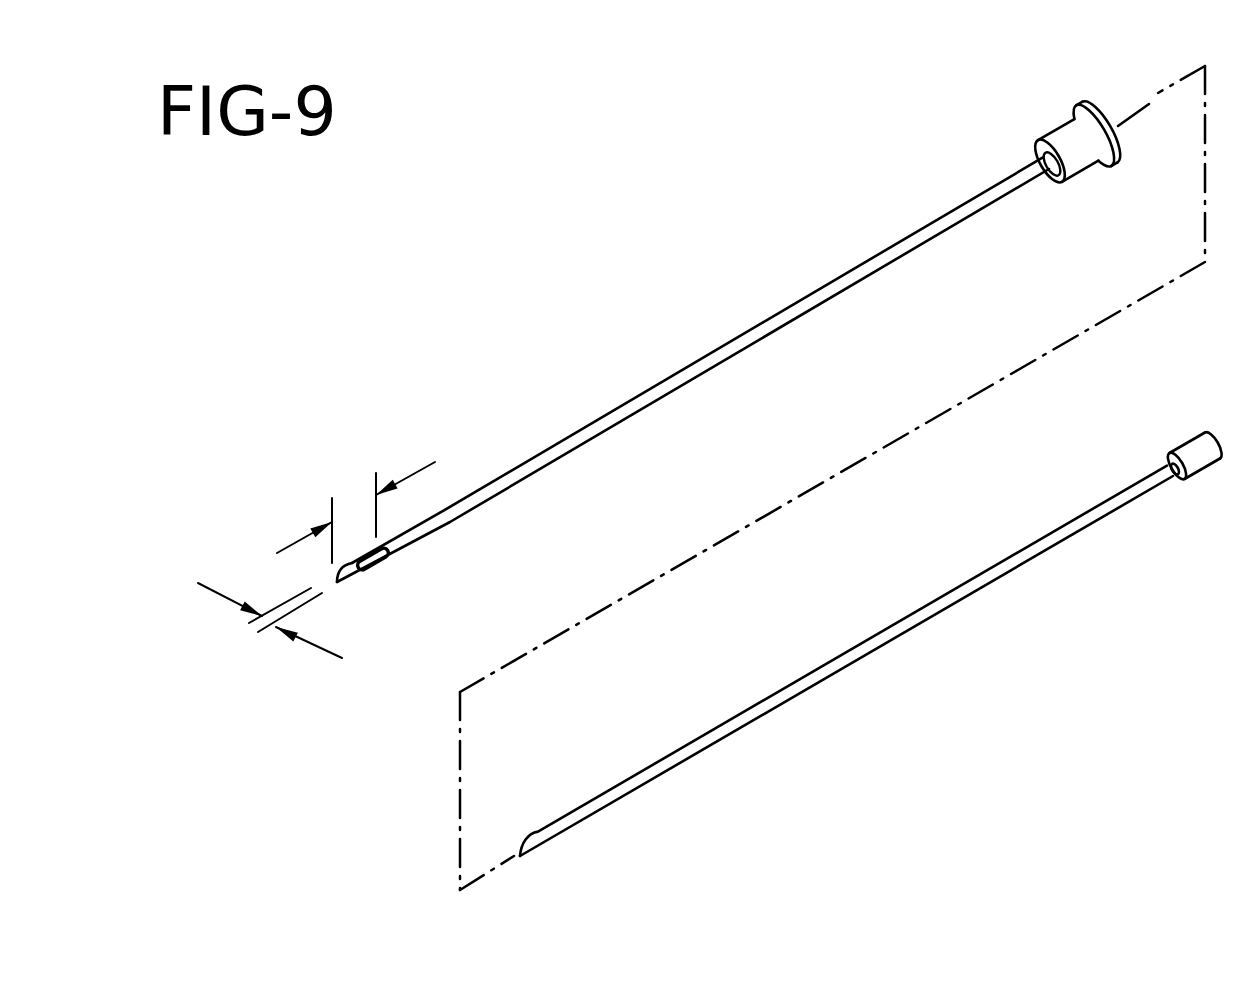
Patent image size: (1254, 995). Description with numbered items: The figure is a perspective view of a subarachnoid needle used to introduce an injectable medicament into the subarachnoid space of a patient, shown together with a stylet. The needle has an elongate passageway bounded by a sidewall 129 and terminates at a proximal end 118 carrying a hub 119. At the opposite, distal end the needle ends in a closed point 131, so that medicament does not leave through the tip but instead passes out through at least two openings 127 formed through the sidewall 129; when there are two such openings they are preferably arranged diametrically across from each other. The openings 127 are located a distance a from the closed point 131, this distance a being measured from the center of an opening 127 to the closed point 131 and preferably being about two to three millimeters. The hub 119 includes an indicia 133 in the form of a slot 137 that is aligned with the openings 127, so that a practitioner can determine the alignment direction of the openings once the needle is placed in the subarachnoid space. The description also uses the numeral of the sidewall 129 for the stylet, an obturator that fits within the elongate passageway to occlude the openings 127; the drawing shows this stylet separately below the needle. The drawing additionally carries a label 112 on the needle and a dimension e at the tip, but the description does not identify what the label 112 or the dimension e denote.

The needle cannula 112 is at (640, 393).
The proximal end 118 is at (1076, 106).
The hub 119 is at (1055, 128).
The openings 127 is at (380, 557).
The sidewall 129 is at (741, 352).
The closed point 131 is at (334, 582).
The indicia 133 is at (1099, 162).
The slot 137 is at (1055, 175).
The distance a is at (355, 500).
The dimension e is at (260, 625).